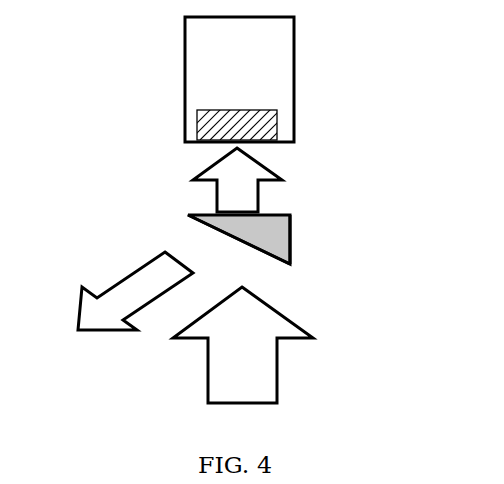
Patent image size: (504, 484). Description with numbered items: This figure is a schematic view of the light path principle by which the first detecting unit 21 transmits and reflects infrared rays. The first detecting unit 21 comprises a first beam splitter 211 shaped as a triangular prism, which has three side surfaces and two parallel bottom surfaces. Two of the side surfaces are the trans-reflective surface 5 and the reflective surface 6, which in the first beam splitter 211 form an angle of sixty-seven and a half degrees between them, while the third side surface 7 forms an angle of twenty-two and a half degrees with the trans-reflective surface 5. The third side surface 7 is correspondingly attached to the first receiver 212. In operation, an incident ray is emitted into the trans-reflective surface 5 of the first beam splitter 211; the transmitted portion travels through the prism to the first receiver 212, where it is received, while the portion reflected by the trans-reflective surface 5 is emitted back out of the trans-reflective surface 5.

The first detecting unit 21 is at (294, 73).
The first receiver 212 is at (186, 107).
The third side surface 7 is at (277, 212).
The trans-reflective surface 5 is at (205, 225).
The reflective surface 6 is at (291, 226).
The first beam splitter 211 is at (260, 235).